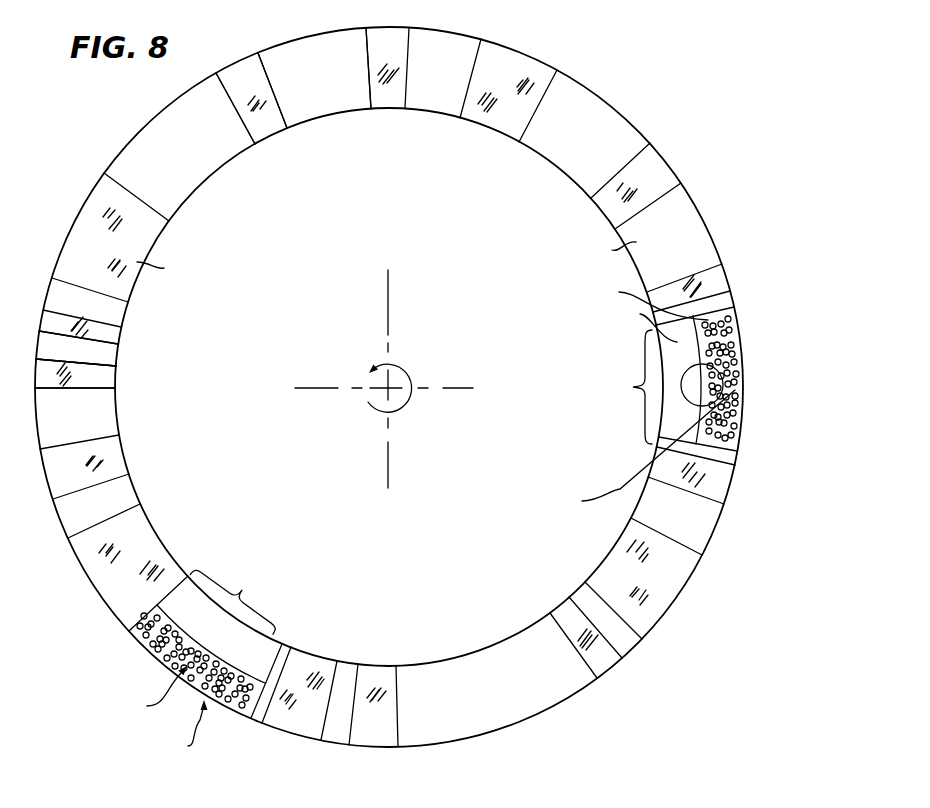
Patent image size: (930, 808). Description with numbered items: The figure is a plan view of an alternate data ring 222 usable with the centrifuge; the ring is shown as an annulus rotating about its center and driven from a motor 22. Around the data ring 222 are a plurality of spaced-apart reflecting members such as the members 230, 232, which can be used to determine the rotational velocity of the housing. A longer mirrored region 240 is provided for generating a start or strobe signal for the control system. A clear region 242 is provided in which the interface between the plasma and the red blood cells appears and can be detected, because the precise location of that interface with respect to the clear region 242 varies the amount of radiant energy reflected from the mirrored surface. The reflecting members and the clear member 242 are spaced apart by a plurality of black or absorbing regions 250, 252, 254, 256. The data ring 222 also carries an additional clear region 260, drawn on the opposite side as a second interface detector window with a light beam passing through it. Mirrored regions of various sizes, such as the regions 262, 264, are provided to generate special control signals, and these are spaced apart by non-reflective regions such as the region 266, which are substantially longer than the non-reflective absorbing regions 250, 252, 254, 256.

The motor 22 is at (669, 17).
The data ring 222 is at (624, 108).
The reflecting member 230 is at (39, 314).
The reflecting member 232 is at (117, 378).
The mirrored region 240 is at (72, 222).
The clear region 242 is at (222, 708).
The absorbing region 250 is at (108, 353).
The absorbing region 252 is at (116, 360).
The absorbing region 254 is at (118, 409).
The absorbing region 256 is at (136, 489).
The clear region 260 is at (735, 318).
The mirrored region 262 is at (391, 110).
The mirrored region 264 is at (271, 132).
The non-reflective region 266 is at (327, 31).